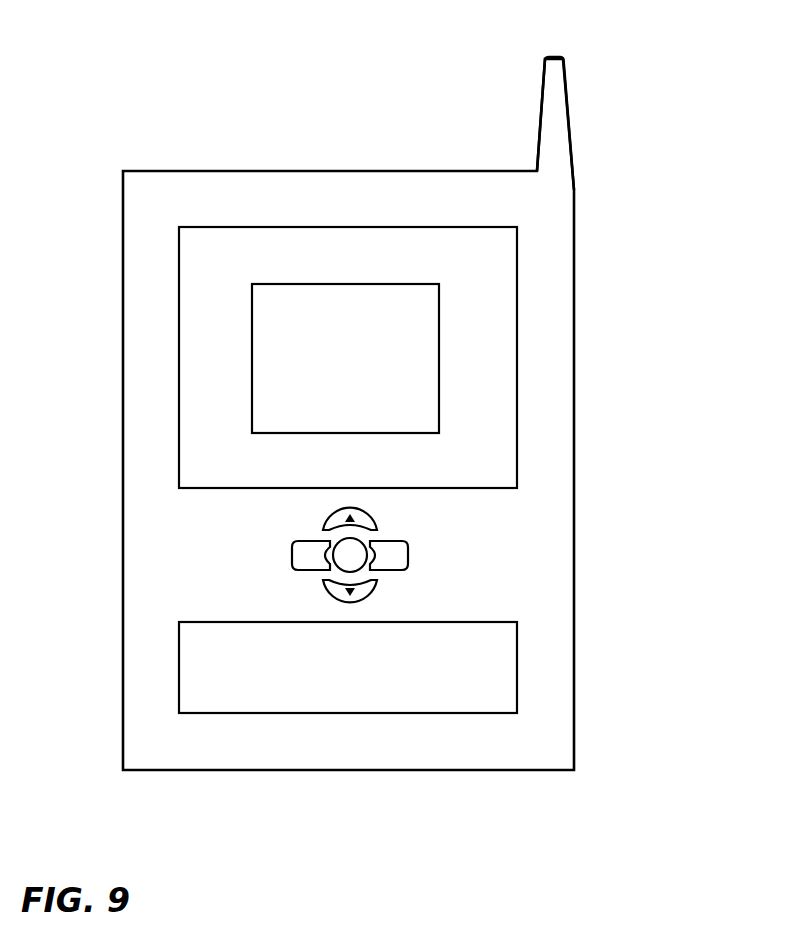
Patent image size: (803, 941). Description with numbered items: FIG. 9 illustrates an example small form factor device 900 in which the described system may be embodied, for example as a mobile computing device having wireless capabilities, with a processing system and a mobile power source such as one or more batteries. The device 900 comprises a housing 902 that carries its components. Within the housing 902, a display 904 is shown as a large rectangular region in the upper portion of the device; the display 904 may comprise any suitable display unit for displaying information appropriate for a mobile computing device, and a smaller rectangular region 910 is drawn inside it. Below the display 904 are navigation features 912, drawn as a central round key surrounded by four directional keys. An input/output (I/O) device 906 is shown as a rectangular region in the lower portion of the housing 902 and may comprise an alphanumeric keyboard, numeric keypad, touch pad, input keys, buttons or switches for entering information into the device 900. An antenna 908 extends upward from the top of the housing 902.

The small form factor device 900 is at (142, 78).
The housing 902 is at (574, 470).
The display 904 is at (517, 246).
The input/output (I/O) device 906 is at (517, 658).
The antenna 908 is at (542, 108).
The display window 910 is at (439, 377).
The navigation features 912 is at (420, 547).